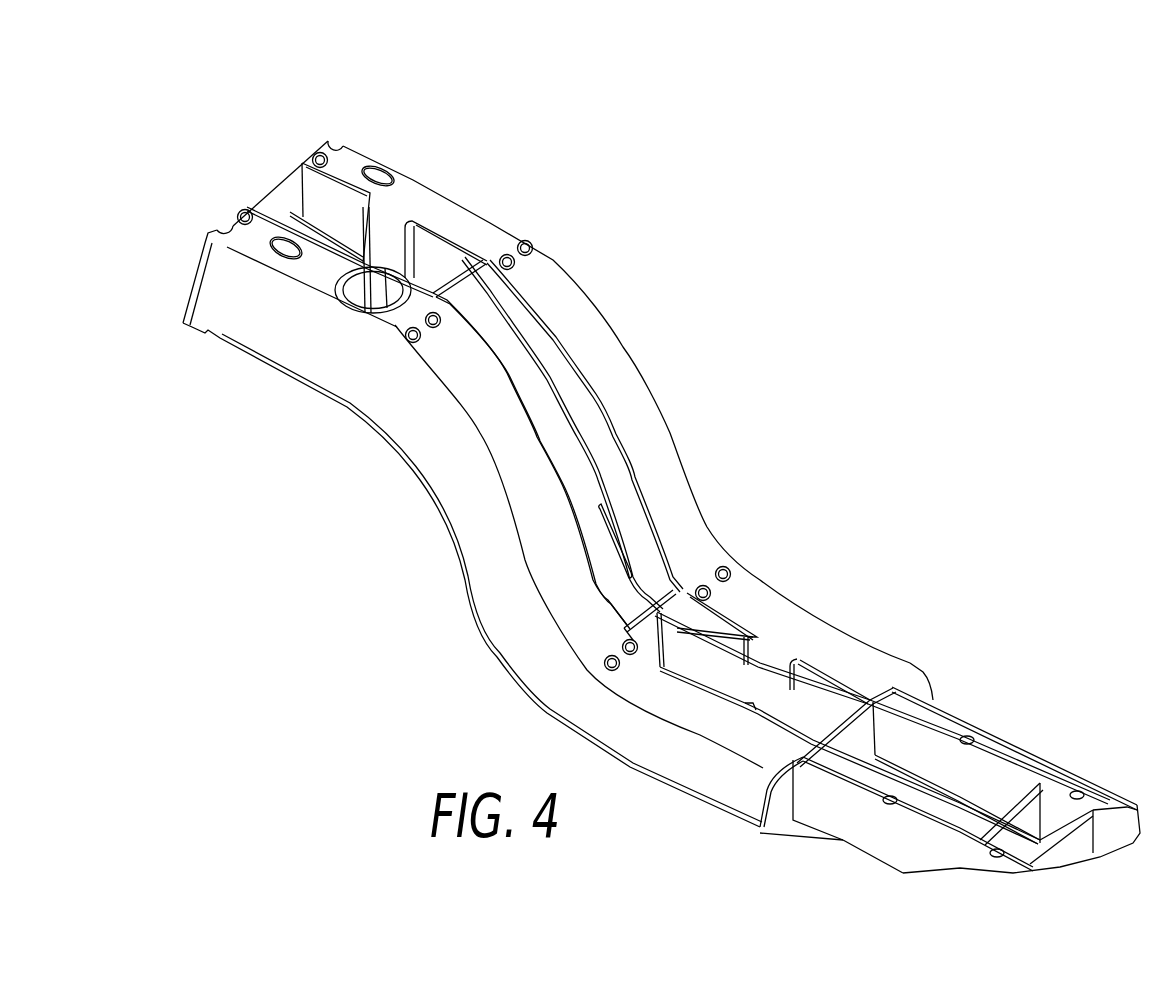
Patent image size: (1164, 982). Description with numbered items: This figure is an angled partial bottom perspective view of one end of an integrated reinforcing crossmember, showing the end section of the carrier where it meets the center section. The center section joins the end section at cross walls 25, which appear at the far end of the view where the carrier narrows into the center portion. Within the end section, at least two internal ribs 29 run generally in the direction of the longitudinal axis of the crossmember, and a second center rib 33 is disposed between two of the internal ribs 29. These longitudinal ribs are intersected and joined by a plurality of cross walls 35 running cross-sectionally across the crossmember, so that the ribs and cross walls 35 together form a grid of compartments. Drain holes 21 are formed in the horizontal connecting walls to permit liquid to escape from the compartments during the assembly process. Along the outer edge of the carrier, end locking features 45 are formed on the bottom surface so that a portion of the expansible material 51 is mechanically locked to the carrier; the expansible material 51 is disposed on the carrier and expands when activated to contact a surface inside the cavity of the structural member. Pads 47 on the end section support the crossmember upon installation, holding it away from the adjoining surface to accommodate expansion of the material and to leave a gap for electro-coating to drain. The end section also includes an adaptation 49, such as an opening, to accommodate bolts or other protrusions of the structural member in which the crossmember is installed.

The drain holes 21 is at (246, 210).
The cross walls 25 is at (917, 682).
The internal ribs 29 is at (520, 390).
The second center rib 33 is at (560, 388).
The cross walls 35 is at (472, 263).
The end locking features 45 is at (220, 225).
The pads 47 is at (380, 170).
The adaptations 49 is at (337, 286).
The expansible material 51 is at (478, 533).